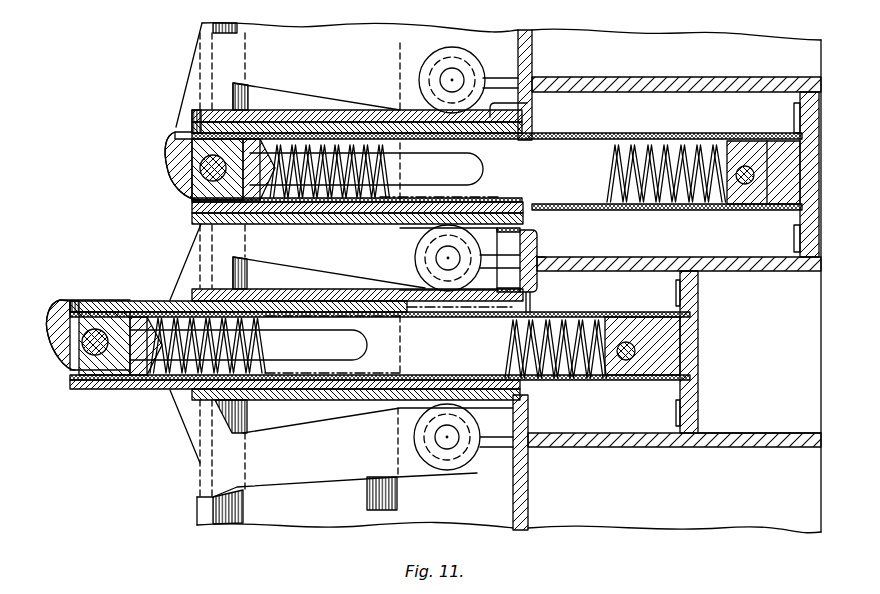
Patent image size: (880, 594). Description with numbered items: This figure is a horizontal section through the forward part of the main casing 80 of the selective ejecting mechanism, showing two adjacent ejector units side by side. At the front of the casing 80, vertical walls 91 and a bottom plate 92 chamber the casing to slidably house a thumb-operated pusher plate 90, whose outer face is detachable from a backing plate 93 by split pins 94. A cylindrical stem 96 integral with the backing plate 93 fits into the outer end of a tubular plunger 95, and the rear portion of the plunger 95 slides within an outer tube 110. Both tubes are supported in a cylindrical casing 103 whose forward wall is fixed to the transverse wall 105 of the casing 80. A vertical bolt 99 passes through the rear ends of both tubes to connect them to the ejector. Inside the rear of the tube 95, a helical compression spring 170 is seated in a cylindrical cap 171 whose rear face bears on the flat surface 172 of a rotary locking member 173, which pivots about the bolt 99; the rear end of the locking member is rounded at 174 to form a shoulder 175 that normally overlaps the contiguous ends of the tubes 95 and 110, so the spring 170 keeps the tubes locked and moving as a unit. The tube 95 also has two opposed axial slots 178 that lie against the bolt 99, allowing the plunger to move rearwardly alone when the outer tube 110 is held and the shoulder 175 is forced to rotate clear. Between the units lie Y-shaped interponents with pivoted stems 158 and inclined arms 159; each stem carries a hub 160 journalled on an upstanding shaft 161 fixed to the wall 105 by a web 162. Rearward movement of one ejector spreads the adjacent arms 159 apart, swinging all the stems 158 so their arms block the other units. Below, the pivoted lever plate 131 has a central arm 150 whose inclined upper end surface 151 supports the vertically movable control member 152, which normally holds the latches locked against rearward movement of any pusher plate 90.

The main casing 80 is at (708, 530).
The pusher plate 90 is at (800, 233).
The vertical walls 91 is at (648, 60).
The bottom plate 92 is at (746, 437).
The backing plate 93 is at (805, 118).
The split pins 94 is at (797, 247).
The tubular plunger 95 is at (688, 139).
The cylindrical stem 96 is at (790, 130).
The vertical bolt 99 is at (205, 170).
The cylindrical casing 103 is at (524, 109).
The transverse wall 105 is at (526, 421).
The outer tube 110 is at (530, 130).
The lever plate 131 is at (398, 495).
The arm 150 is at (492, 273).
The inclined upper end surface 151 is at (541, 258).
The control member 152 is at (536, 241).
The pivoted stem 158 is at (275, 53).
The inclined arms 159 is at (198, 82).
The hub 160 is at (458, 70).
The shaft 161 is at (455, 80).
The web 162 is at (521, 75).
The helical compression spring 170 is at (681, 210).
The cylindrical cap 171 is at (272, 147).
The flat surface 172 is at (192, 204).
The rotary locking member 173 is at (178, 163).
The rounded rear face 174 is at (173, 140).
The shoulder 175 is at (190, 128).
The axial slots 178 is at (486, 172).